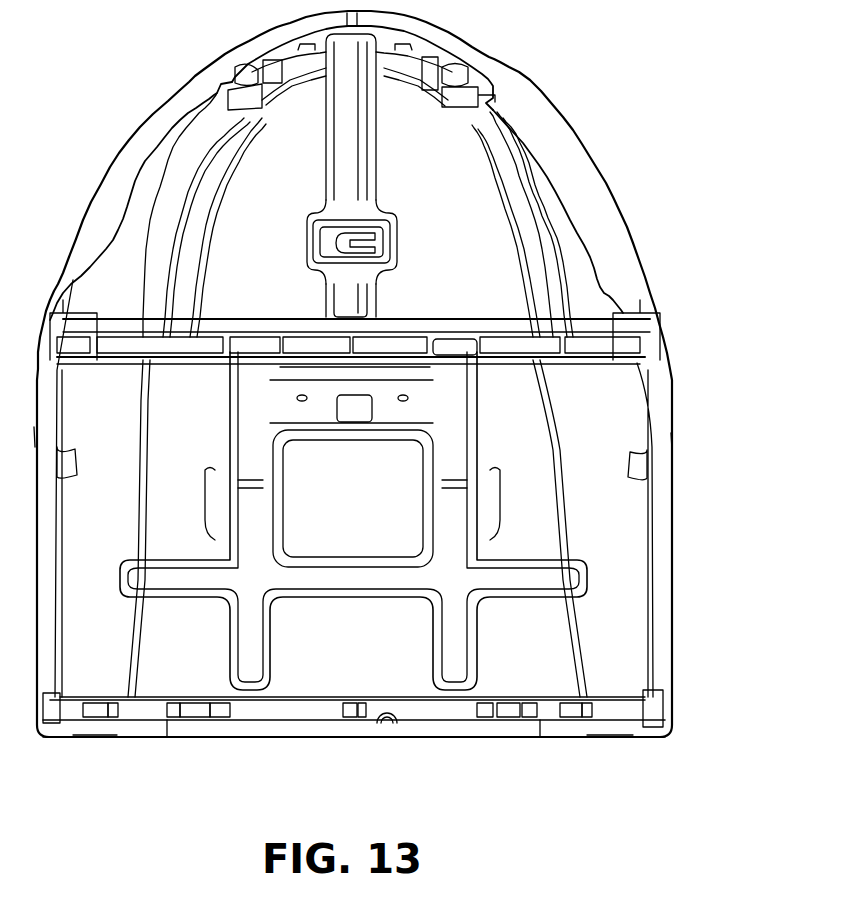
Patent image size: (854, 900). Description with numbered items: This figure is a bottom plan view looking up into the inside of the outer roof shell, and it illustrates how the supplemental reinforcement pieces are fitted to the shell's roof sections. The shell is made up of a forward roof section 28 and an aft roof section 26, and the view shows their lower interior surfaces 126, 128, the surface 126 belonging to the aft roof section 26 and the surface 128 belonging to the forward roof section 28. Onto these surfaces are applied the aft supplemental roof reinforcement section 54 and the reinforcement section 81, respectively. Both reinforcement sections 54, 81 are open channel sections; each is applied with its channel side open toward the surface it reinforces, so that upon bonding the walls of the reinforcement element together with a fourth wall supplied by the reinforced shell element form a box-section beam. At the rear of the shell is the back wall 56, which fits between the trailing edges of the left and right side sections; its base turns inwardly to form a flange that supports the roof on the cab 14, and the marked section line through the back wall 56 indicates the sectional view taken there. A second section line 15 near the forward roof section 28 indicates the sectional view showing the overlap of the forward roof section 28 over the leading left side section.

The cab 14 is at (365, 762).
The section line 15-15 / latch clip 15 is at (305, 124).
The aft roof section 26 is at (533, 652).
The forward roof section 28 is at (456, 266).
The aft supplemental roof reinforcement section 54 is at (457, 527).
The back wall 56 is at (297, 722).
The reinforcement section 81 is at (355, 172).
The lower interior surface 126 is at (610, 500).
The lower interior surface 128 is at (457, 193).